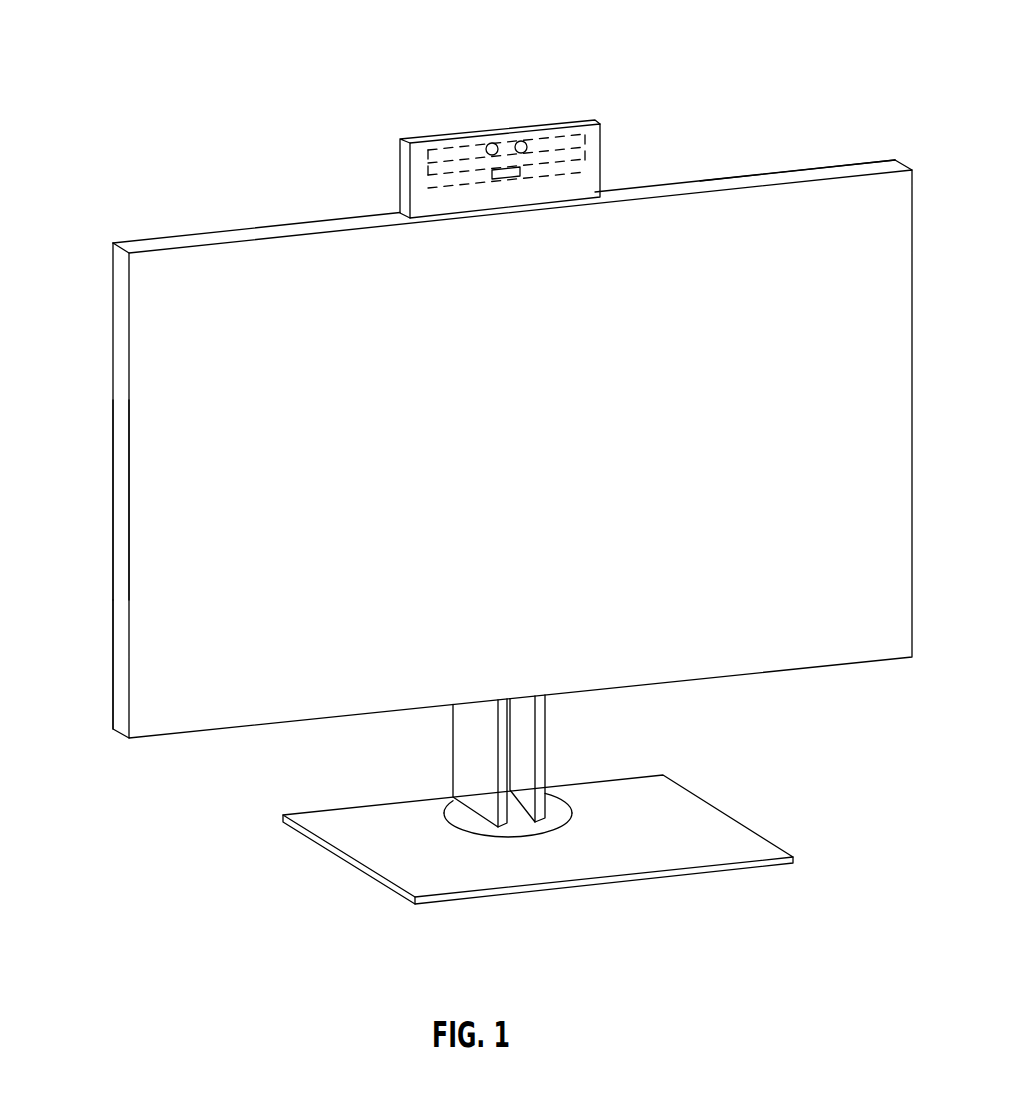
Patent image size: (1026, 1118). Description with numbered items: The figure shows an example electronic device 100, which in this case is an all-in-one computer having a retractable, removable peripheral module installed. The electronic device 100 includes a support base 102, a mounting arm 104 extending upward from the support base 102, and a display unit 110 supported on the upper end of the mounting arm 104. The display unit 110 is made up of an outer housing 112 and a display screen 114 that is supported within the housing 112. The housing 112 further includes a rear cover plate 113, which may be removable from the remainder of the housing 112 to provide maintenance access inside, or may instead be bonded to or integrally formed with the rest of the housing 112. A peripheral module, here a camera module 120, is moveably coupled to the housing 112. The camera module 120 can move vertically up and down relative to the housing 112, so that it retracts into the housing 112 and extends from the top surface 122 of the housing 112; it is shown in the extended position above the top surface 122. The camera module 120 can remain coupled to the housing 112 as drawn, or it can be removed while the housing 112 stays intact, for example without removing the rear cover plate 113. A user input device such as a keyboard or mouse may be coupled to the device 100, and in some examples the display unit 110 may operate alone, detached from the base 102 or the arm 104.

The electronic device 100 is at (161, 44).
The support base 102 is at (380, 826).
The mounting arm 104 is at (545, 760).
The display unit 110 is at (118, 340).
The outer housing 112 is at (257, 227).
The rear cover plate 113 is at (109, 642).
The display screen 114 is at (150, 432).
The camera module 120 is at (592, 163).
The top surface 122 is at (799, 169).